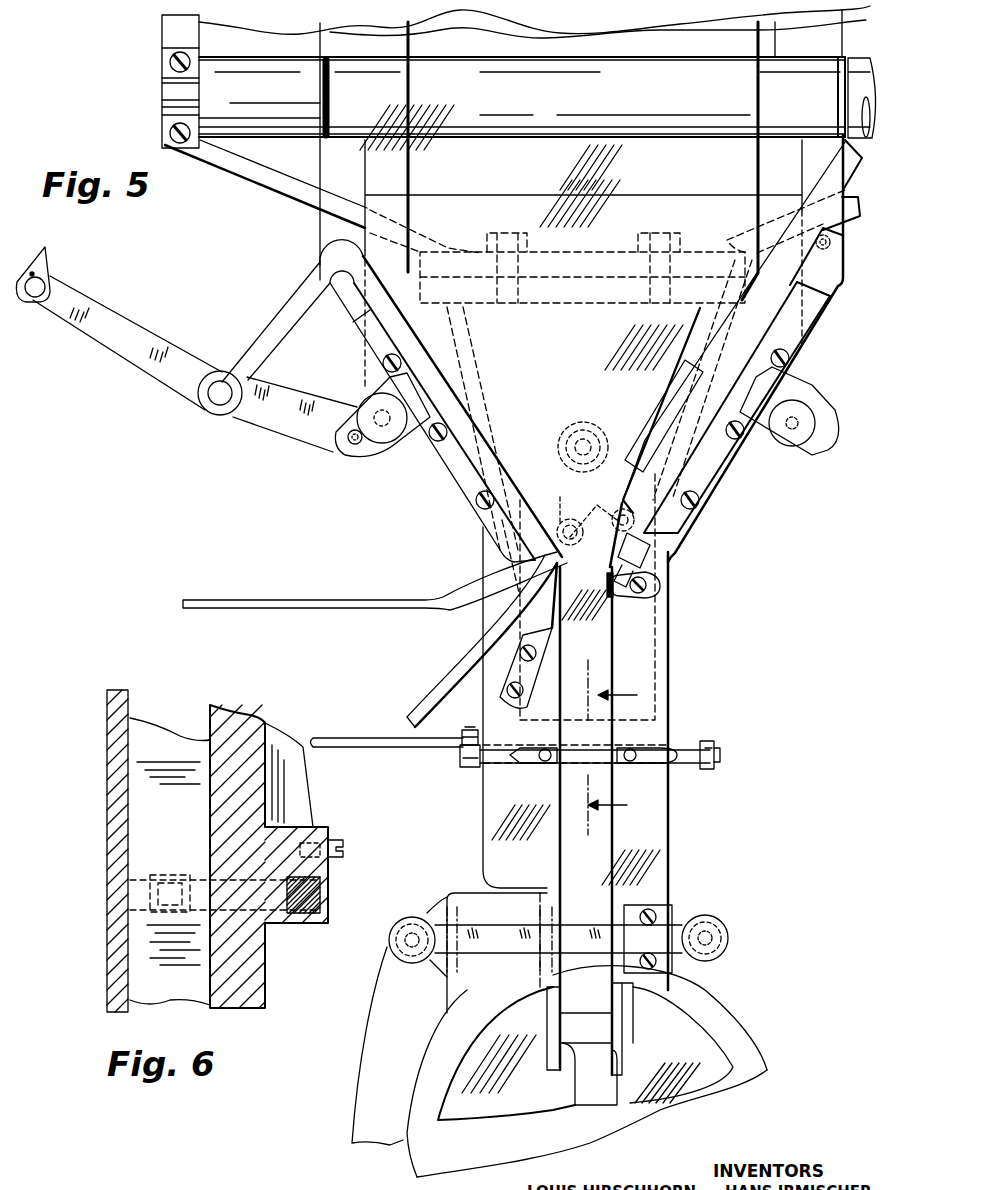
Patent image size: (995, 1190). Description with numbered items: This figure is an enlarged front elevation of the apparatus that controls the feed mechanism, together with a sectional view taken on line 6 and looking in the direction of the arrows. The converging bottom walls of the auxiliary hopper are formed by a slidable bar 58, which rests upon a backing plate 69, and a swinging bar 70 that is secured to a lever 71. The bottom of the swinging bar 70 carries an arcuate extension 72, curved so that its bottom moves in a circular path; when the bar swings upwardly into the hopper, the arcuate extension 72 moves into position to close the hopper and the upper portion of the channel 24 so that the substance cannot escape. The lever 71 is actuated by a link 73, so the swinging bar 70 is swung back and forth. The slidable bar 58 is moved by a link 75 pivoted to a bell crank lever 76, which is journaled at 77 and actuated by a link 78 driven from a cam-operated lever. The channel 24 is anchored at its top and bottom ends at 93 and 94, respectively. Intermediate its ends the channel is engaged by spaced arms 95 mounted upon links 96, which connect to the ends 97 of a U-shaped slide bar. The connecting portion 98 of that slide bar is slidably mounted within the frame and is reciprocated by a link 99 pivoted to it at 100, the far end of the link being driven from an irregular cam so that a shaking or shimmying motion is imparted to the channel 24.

In FIG. 5, the section line 6— 6 is at (613, 750).
In FIG. 5, the channel 24 is at (617, 840).
In FIG. 6, the channel 24 is at (160, 813).
In FIG. 5, the slidable bar 58 is at (765, 330).
In FIG. 5, the backing plate 69 is at (812, 327).
In FIG. 5, the swinging bar 70 is at (470, 447).
In FIG. 5, the lever 71 is at (183, 377).
In FIG. 5, the arcuate extension 72 is at (450, 694).
In FIG. 5, the link 73 is at (40, 268).
In FIG. 5, the link 75 is at (736, 452).
In FIG. 5, the bell crank lever 76 is at (563, 507).
In FIG. 5, the journal 77 is at (583, 437).
In FIG. 5, the link 78 is at (400, 603).
In FIG. 5, the top anchorage 93 is at (658, 586).
In FIG. 5, the bottom anchorage 94 is at (640, 960).
In FIG. 5, the spaced arms 95 is at (627, 762).
In FIG. 5, the links 96 is at (683, 766).
In FIG. 6, the ends of U-shaped slide bar 97 is at (163, 910).
In FIG. 6, the connecting portion of U-shaped slide bar 98 is at (332, 900).
In FIG. 5, the link 99 is at (374, 745).
In FIG. 5, the pivot 100 is at (470, 734).